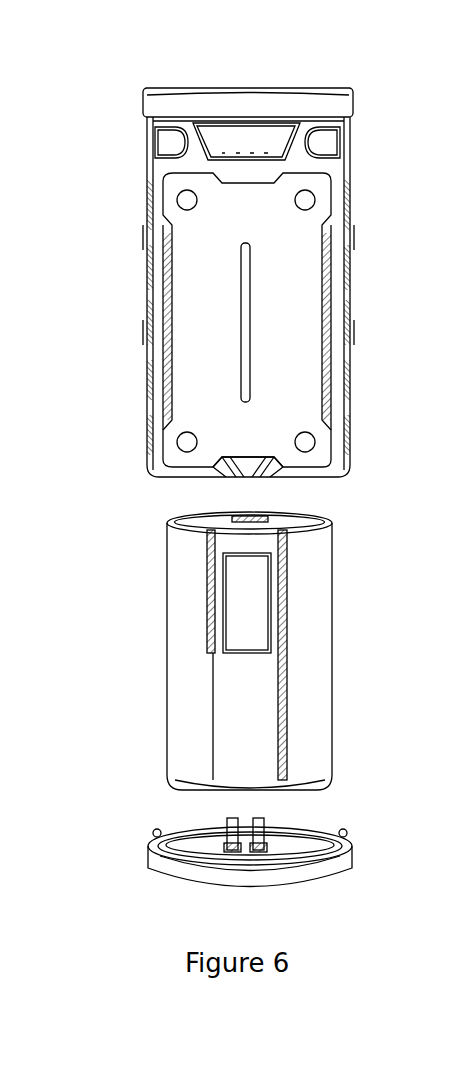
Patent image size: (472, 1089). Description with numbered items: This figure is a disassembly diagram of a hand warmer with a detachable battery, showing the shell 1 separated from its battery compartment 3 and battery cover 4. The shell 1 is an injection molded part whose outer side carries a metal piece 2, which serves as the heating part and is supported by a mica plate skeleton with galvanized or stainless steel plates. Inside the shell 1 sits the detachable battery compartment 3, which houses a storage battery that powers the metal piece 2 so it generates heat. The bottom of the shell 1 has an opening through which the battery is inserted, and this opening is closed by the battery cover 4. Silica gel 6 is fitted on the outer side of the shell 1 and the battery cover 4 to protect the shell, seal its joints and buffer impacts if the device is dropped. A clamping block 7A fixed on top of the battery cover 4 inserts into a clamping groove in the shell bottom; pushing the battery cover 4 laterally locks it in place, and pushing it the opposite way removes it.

The shell 1 is at (168, 143).
The metal piece 2 is at (243, 90).
The battery compartment 3 is at (200, 650).
The battery cover 4 is at (185, 843).
The silica gel 6 is at (150, 372).
The clamping block 7A is at (266, 863).